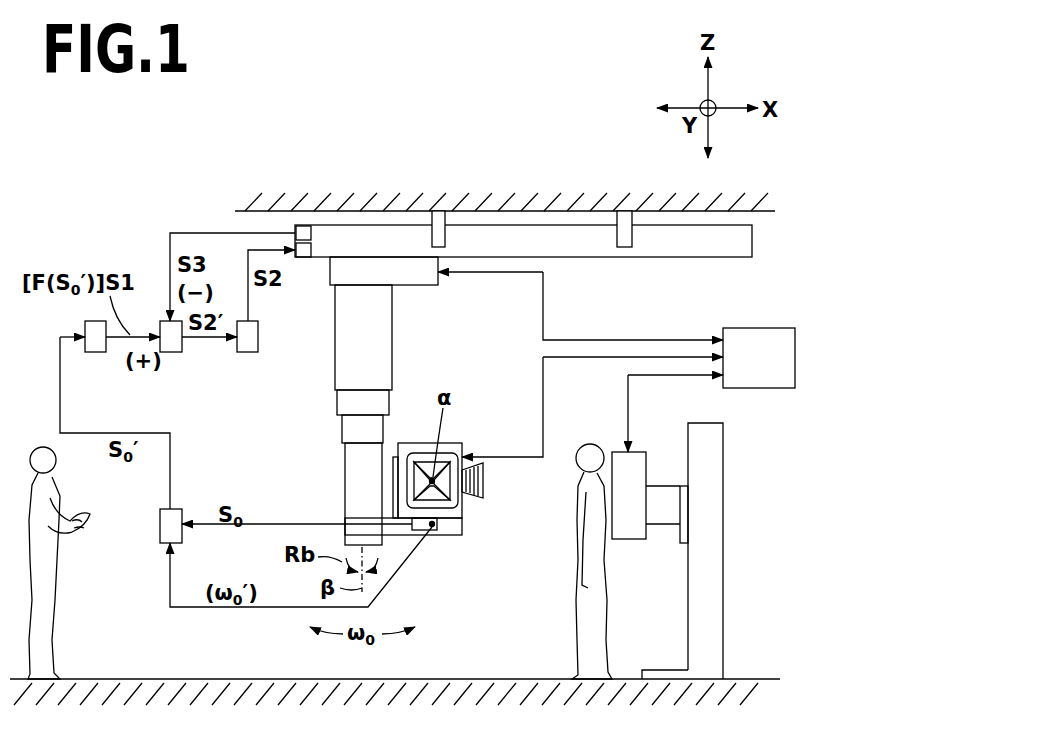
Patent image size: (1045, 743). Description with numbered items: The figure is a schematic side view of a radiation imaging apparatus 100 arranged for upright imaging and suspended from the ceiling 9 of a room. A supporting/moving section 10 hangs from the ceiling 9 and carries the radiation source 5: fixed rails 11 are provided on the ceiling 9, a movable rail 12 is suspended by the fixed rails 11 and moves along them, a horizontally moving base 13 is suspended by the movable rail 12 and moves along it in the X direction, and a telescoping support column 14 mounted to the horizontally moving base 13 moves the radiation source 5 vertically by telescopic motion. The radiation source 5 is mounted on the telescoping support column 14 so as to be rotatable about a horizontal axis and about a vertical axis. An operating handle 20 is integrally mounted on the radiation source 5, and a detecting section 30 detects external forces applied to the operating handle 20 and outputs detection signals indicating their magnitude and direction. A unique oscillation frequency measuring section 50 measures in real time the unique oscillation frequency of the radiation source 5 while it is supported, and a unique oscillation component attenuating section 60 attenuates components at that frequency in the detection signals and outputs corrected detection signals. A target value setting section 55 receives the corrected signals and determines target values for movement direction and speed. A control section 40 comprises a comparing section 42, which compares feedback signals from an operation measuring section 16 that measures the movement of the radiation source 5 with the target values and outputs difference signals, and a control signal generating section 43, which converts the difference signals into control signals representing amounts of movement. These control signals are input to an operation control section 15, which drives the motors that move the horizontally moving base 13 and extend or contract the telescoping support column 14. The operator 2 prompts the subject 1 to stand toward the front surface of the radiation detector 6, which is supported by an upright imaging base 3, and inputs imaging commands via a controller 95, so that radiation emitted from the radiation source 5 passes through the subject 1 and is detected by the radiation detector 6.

The radiation imaging apparatus 100 is at (148, 190).
The ceiling 9 is at (775, 211).
The movable rail 12 is at (695, 248).
The fixed rails 11 is at (445, 233).
The operation measuring section 16 is at (302, 232).
The operation control section 15 is at (307, 250).
The horizontally moving base 13 is at (333, 272).
The telescoping support column 14 is at (378, 320).
The supporting/moving section 10 is at (447, 290).
The controller 95 is at (760, 328).
The detecting section 30 is at (455, 452).
The operating handle 20 is at (410, 462).
The radiation source 5 is at (478, 497).
The unique oscillation frequency measuring section 50 is at (438, 529).
The target value setting section 55 is at (96, 355).
The comparing section 42 is at (170, 355).
The control signal generating section 43 is at (247, 355).
The control section 40 is at (262, 403).
The unique oscillation component attenuating section 60 is at (178, 509).
The operator 2 is at (34, 451).
The subject 1 is at (577, 533).
The radiation detector 6 is at (630, 539).
The upright imaging base 3 is at (715, 505).